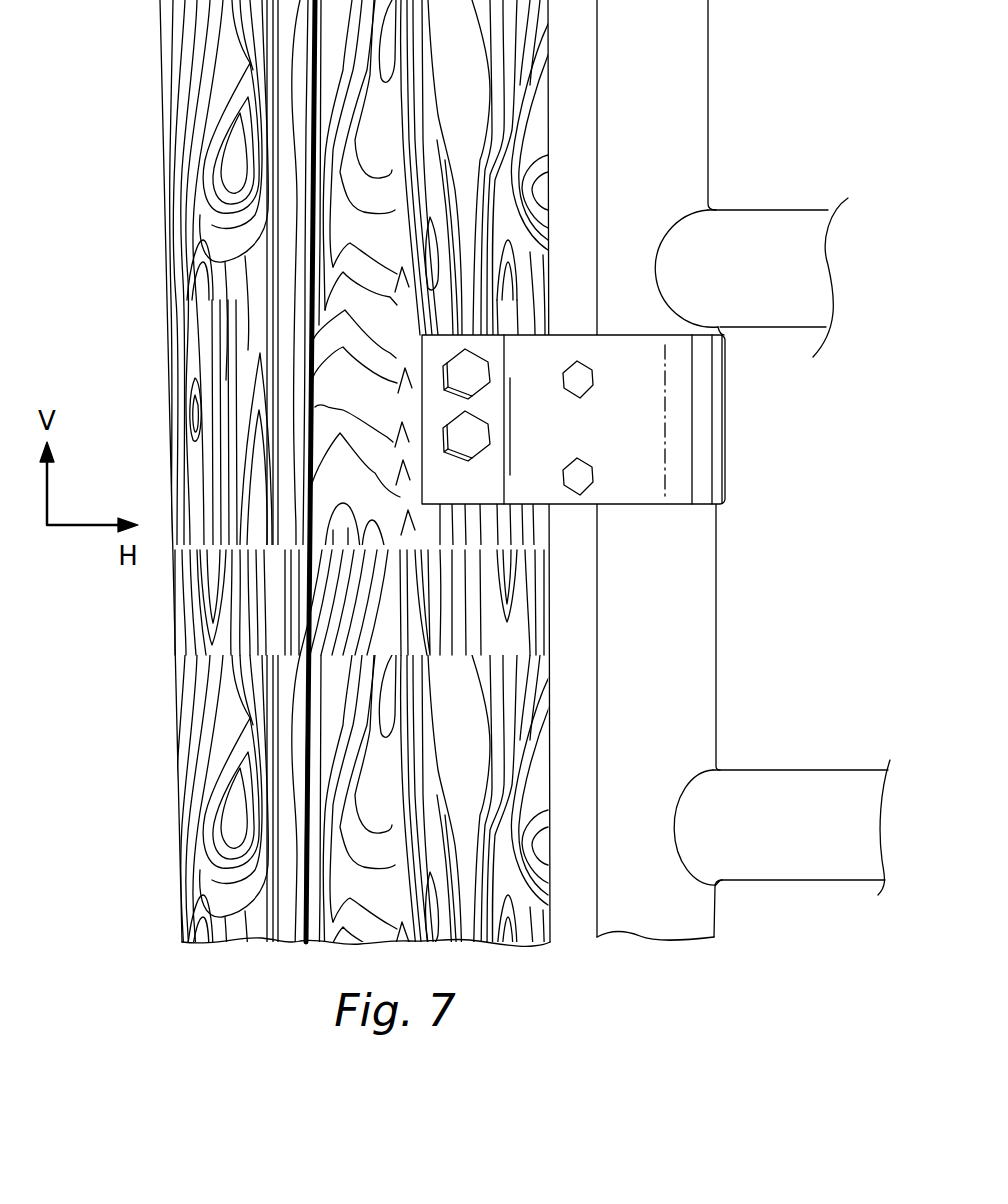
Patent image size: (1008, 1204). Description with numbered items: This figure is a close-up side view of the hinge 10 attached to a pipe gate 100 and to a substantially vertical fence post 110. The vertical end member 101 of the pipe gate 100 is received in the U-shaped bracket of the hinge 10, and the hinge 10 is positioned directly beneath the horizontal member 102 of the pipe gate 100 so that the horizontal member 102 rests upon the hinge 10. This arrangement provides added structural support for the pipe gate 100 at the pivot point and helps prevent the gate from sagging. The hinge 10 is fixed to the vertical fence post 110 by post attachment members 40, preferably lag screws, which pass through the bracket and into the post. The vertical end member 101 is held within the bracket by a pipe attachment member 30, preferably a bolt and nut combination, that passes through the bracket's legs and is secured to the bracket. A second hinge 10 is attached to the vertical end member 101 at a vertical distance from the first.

The hinge 10 is at (705, 463).
The pipe attachment member 30 is at (595, 473).
The post attachment member 40 is at (478, 372).
The pipe gate 100 is at (810, 768).
The vertical end member 101 is at (690, 613).
The horizontal member 102 is at (775, 210).
The vertical fence post 110 is at (165, 72).